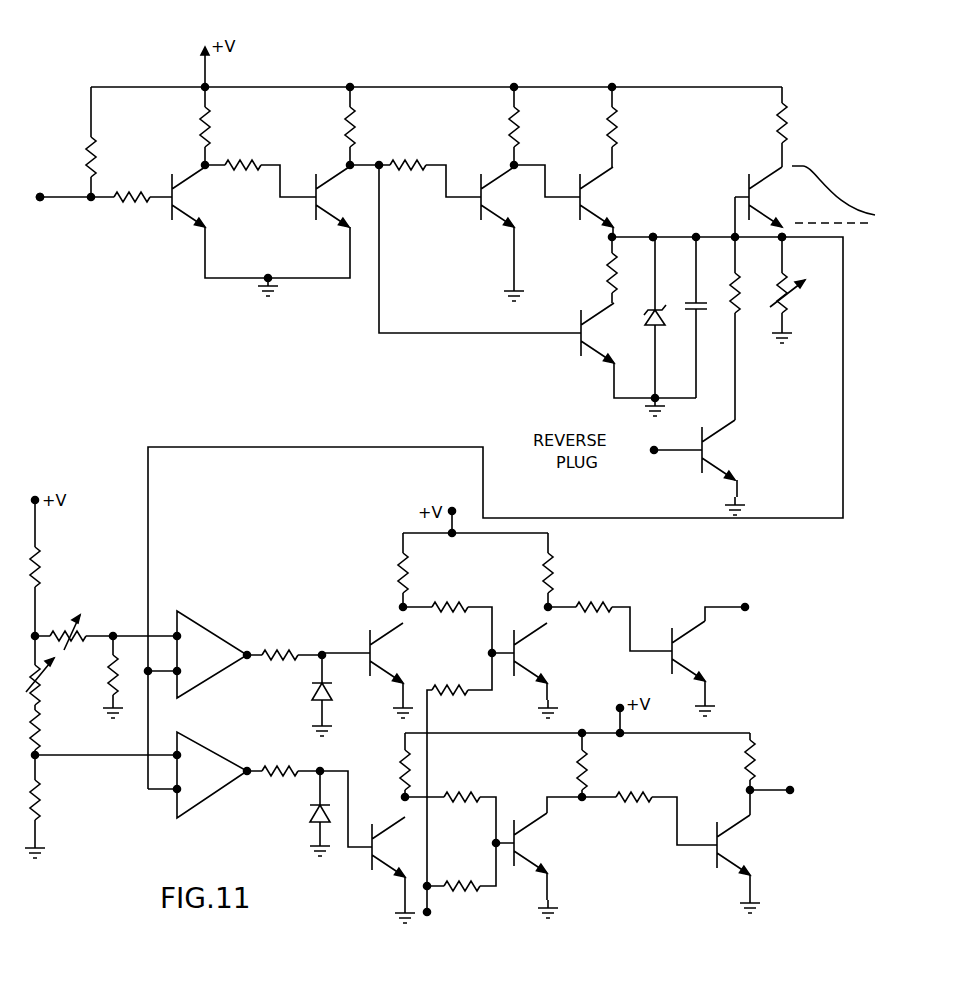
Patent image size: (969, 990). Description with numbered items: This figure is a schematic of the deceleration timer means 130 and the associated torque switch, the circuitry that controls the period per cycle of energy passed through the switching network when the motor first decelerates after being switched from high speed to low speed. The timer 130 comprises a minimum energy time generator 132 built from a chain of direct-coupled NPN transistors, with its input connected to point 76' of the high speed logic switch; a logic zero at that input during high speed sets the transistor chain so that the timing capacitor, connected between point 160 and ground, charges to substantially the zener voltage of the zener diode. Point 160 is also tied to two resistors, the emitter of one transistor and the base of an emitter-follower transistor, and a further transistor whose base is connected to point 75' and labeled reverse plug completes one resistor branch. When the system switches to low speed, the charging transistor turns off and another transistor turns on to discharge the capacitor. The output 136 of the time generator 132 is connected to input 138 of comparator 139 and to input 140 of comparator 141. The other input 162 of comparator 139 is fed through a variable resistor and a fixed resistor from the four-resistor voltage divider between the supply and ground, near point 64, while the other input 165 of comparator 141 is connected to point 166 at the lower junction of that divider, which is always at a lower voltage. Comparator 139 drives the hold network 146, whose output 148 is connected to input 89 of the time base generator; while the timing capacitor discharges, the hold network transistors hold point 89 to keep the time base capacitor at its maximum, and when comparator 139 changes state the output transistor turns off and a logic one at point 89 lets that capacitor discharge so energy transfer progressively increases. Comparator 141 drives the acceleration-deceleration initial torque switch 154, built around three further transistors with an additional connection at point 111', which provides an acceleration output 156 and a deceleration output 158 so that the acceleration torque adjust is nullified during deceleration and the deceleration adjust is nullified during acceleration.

The point of high speed logic switch 76' is at (31, 223).
The deceleration timer means 130 is at (143, 378).
The minimum energy time generator 132 is at (683, 175).
The point 160 is at (655, 233).
The output of minimum energy time generator 136 is at (785, 240).
The reverse plug input 75' is at (648, 470).
The reference voltage node 64 is at (34, 631).
The input of comparator 139 162 is at (177, 636).
The comparator 139 is at (214, 667).
The input of comparator 139 138 is at (177, 671).
The input of comparator 141 165 is at (177, 755).
The comparator 141 is at (214, 784).
The input of comparator 141 140 is at (177, 789).
The point 166 is at (40, 758).
The hold network 146 is at (675, 588).
The output of hold network 148 is at (748, 604).
The input of time base generator 89 is at (750, 608).
The acceleration output 156 is at (585, 800).
The deceleration output 158 is at (794, 790).
The acceleration-deceleration initial torque switch 154 is at (643, 884).
The input terminal 111' is at (449, 923).